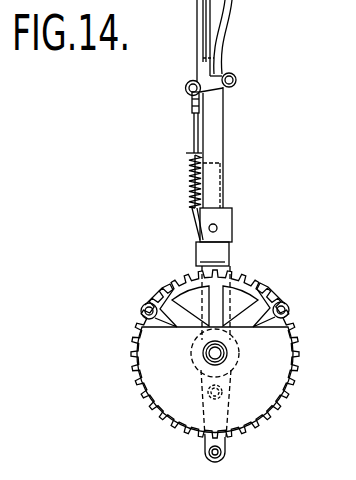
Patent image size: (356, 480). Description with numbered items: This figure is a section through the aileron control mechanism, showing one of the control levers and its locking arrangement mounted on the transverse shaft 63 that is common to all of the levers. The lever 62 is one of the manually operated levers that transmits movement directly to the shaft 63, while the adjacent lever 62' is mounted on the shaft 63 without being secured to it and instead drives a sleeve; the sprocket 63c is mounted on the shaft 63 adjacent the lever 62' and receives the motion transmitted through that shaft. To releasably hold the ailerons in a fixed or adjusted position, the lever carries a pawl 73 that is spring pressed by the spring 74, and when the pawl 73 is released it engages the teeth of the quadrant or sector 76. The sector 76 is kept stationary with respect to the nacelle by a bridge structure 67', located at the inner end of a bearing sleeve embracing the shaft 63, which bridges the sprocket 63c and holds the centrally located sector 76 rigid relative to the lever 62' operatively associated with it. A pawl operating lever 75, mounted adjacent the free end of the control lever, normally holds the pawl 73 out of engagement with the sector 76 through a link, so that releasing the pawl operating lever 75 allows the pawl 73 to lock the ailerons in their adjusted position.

The pawl operating lever 75 is at (201, 15).
The control lever 62 is at (229, 121).
The spring 74 is at (192, 193).
The pawl 73 is at (200, 264).
The sector 76 is at (258, 279).
The sprocket 63c is at (283, 352).
The shaft 63 is at (207, 360).
The control lever 62' is at (192, 367).
The bridge structure 67' is at (243, 454).